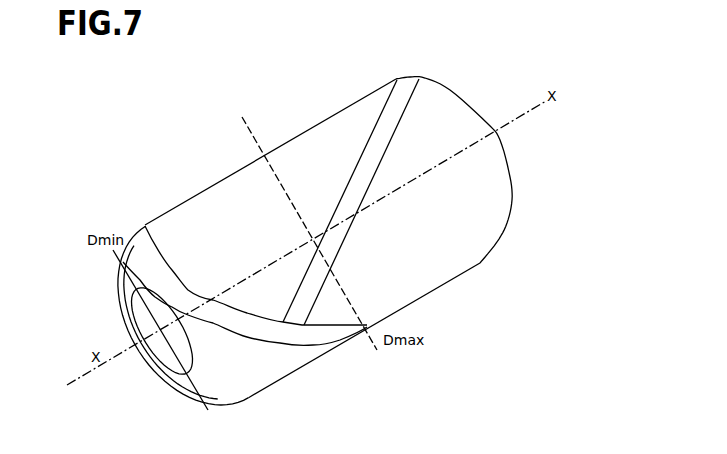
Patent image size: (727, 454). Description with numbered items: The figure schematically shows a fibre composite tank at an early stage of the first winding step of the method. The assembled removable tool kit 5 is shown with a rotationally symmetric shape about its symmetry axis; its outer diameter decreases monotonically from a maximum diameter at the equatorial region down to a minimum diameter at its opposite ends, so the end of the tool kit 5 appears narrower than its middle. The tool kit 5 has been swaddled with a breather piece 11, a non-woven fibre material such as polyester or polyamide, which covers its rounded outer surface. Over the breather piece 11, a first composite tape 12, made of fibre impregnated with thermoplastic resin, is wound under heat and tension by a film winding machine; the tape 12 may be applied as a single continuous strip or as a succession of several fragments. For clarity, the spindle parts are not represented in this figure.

The removable tool kit 5 is at (492, 108).
The breather piece 11 is at (265, 197).
The first composite tape 12 is at (150, 250).